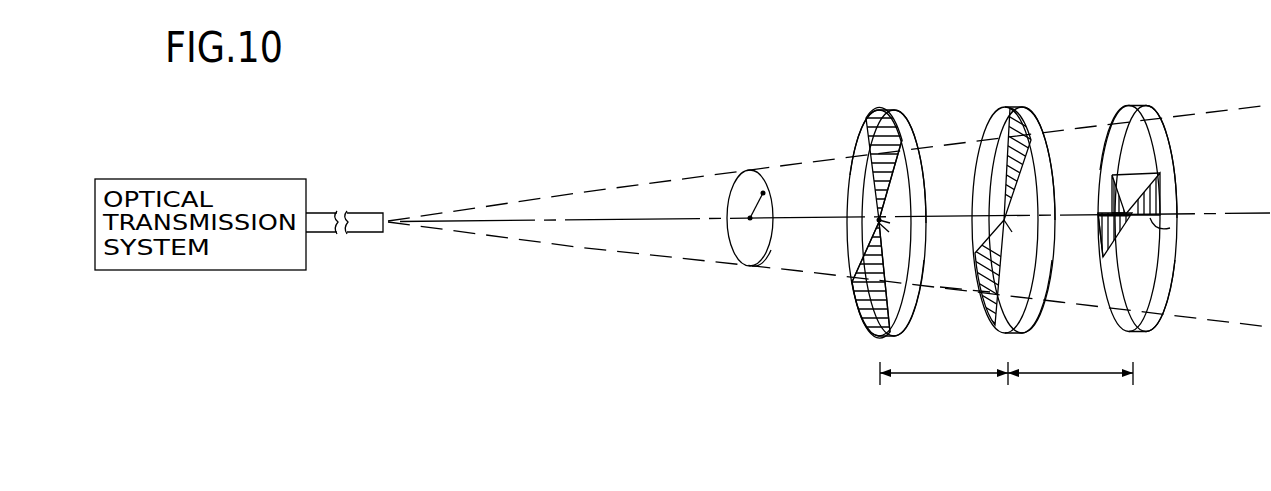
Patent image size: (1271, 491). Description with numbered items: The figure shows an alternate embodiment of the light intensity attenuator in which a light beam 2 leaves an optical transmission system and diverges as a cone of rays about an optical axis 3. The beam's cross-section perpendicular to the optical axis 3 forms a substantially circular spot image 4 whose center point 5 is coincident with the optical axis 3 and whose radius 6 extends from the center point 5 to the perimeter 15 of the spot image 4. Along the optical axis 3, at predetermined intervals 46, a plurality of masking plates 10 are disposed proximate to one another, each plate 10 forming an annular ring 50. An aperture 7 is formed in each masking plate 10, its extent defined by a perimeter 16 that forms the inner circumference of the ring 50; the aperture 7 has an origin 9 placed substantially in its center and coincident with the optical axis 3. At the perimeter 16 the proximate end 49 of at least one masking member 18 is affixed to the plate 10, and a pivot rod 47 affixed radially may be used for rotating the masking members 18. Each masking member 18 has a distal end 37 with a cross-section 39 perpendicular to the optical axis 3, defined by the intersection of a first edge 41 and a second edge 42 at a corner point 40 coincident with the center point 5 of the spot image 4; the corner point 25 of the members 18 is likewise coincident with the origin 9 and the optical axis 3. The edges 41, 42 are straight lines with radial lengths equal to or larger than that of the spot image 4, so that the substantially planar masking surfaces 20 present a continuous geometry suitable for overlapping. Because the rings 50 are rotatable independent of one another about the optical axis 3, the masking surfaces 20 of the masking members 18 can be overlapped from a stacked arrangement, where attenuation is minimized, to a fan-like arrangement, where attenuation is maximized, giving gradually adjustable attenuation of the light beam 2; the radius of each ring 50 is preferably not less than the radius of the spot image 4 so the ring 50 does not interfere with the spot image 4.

The light beam 2 is at (573, 189).
The optical axis 3 is at (535, 224).
The spot image 4 is at (732, 166).
The center point 5 is at (748, 219).
The radius 6 is at (751, 212).
The aperture 7 is at (860, 150).
The origin 9 is at (874, 219).
The masking plate 10 is at (826, 93).
The perimeter 15 is at (770, 262).
The perimeter 16 is at (908, 330).
The masking member 18 is at (862, 317).
The masking surface 20 is at (1115, 244).
The corner point 25 is at (887, 234).
The distal end 37 is at (852, 300).
The cross-section 39 is at (983, 288).
The corner point 40 is at (883, 219).
The first edge 41 is at (856, 262).
The second edge 42 is at (895, 308).
The predetermined interval 46 is at (1006, 383).
The pivot rod 47 is at (859, 140).
The proximate end 49 is at (903, 172).
The annular ring 50 is at (899, 115).